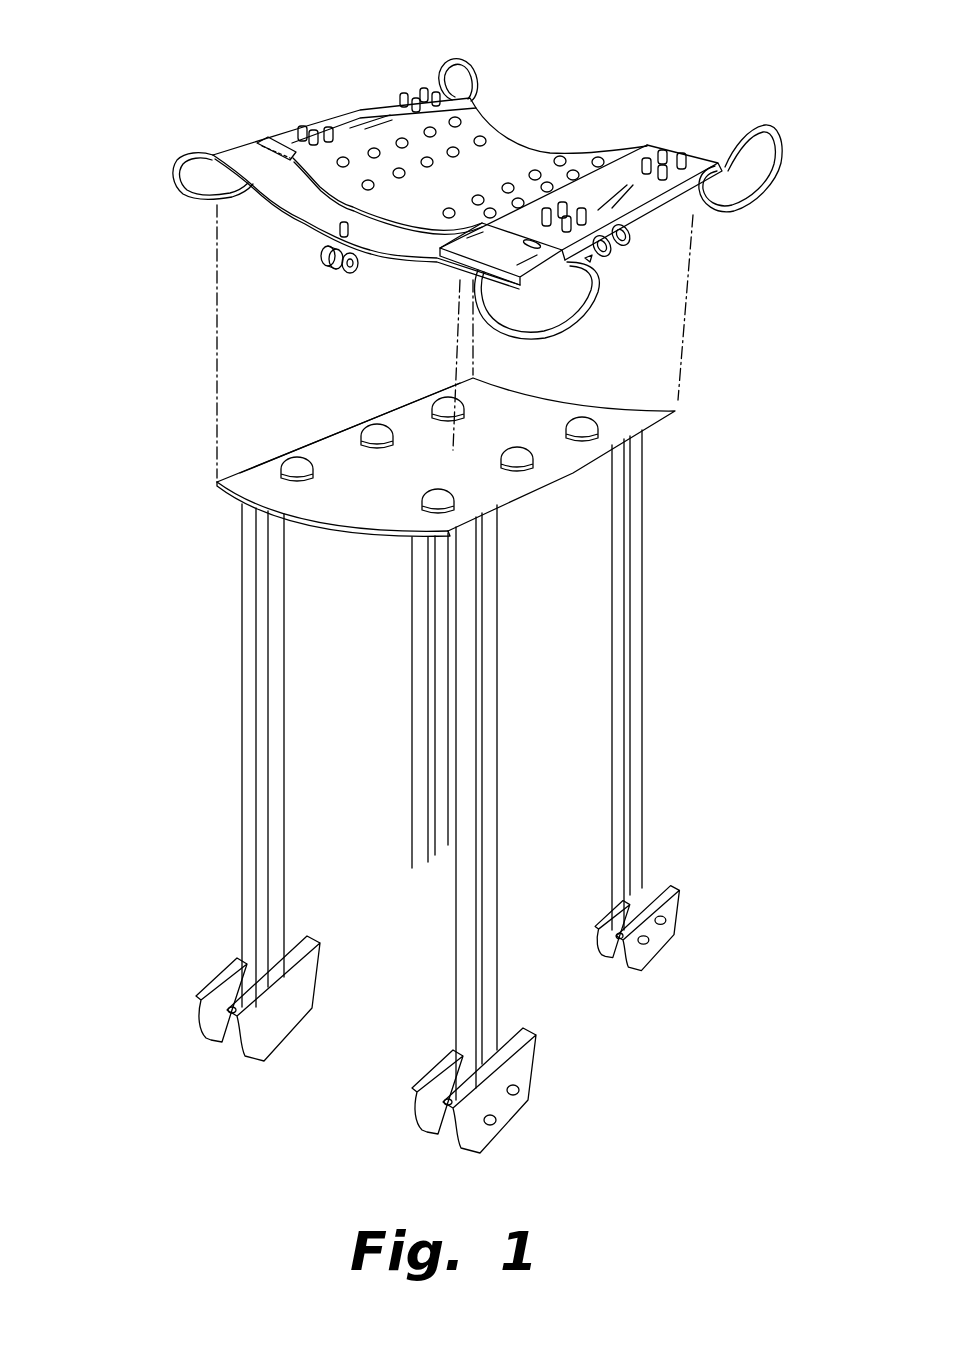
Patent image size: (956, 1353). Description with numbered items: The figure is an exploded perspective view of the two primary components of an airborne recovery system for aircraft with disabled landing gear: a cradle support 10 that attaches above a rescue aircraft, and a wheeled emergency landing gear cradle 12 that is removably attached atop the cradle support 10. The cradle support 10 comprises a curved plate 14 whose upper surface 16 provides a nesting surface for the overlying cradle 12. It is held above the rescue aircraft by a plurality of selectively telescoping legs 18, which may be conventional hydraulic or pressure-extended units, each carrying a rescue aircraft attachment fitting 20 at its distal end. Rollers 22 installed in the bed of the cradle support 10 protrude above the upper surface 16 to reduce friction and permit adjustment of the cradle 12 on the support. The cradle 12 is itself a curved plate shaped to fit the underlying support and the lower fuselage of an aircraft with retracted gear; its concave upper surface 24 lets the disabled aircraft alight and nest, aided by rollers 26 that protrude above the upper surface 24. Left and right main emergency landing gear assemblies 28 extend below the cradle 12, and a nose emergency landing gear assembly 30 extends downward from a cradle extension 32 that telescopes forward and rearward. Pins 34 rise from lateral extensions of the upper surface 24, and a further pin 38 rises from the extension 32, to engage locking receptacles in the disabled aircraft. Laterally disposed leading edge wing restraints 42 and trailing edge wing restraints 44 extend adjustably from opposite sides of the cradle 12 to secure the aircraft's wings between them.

The cradle support 10 is at (205, 713).
The emergency landing gear cradle 12 is at (182, 100).
The curved plate 14 is at (230, 492).
The upper surface 16 is at (348, 478).
The telescoping legs 18 is at (268, 875).
The rescue aircraft attachment fittings 20 is at (252, 1053).
The rollers 22 is at (447, 400).
The upper surface 24 is at (498, 163).
The rollers 26 is at (453, 157).
The main emergency landing gear assemblies 28 is at (617, 246).
The nose emergency landing gear assembly 30 is at (333, 273).
The cradle extension 32 is at (405, 260).
The pins 34 is at (400, 95).
The pin 38 is at (338, 229).
The leading edge wing restraints 42 is at (185, 200).
The trailing edge wing restraints 44 is at (437, 70).